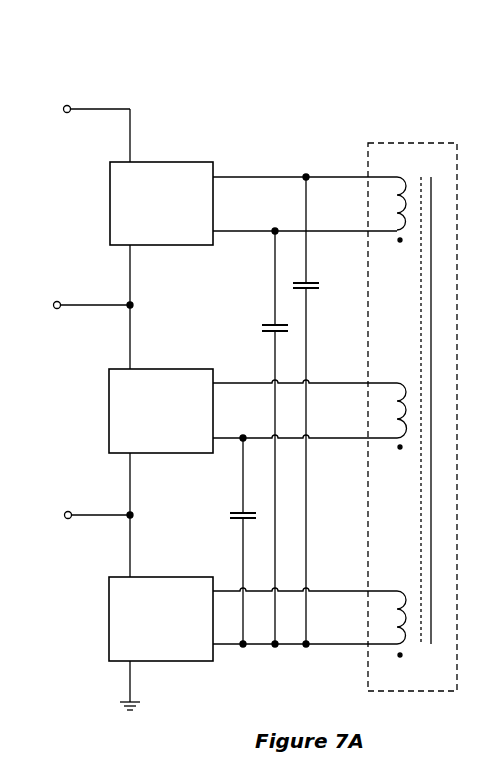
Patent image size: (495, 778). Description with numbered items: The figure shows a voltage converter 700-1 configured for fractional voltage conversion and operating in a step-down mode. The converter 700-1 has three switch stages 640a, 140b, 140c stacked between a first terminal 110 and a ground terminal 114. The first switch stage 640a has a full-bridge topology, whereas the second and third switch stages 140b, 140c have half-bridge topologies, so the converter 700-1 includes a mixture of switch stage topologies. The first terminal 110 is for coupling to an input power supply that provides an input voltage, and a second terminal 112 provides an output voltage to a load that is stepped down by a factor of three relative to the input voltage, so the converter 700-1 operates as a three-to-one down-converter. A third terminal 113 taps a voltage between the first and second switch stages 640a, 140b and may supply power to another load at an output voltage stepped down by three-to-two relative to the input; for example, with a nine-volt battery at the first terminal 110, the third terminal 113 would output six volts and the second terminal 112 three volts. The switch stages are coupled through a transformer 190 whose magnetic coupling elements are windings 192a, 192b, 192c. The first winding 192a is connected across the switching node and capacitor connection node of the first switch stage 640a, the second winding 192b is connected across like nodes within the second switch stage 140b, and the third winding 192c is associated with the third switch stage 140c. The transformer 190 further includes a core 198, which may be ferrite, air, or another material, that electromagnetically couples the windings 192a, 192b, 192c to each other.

The voltage converter 700-1 is at (355, 58).
The first terminal 110 is at (90, 108).
The third terminal 113 is at (86, 308).
The second terminal 112 is at (90, 517).
The ground terminal 114 is at (110, 685).
The first switch stage 640a is at (163, 195).
The second switch stage 140b is at (161, 402).
The third switch stage 140c is at (162, 610).
The transformer 190 is at (412, 407).
The core 198 is at (426, 401).
The first winding 192a is at (399, 220).
The second winding 192b is at (399, 428).
The winding c 192c is at (399, 633).